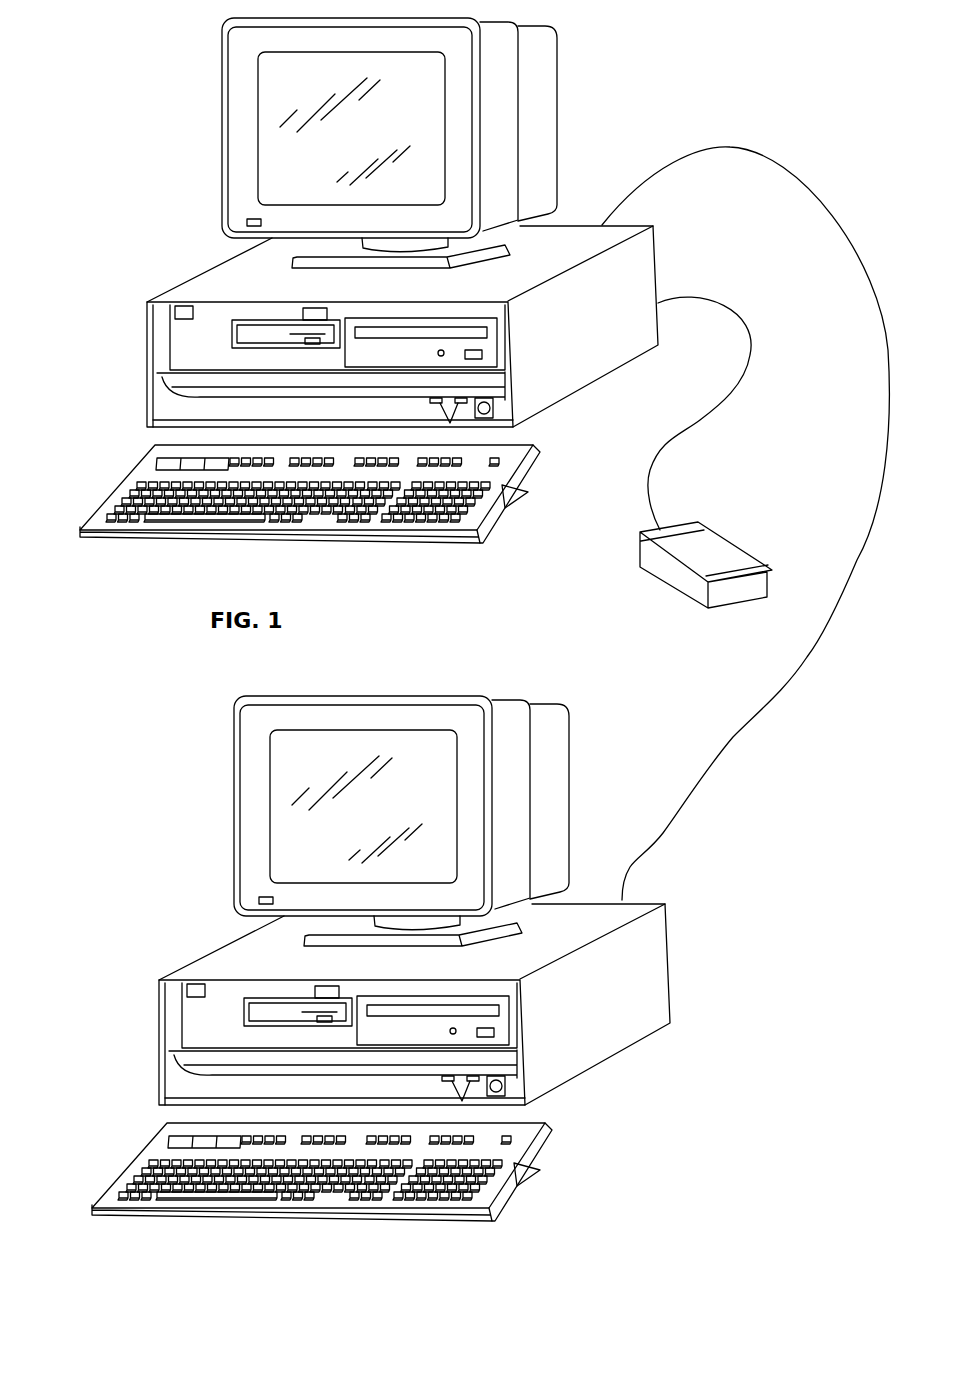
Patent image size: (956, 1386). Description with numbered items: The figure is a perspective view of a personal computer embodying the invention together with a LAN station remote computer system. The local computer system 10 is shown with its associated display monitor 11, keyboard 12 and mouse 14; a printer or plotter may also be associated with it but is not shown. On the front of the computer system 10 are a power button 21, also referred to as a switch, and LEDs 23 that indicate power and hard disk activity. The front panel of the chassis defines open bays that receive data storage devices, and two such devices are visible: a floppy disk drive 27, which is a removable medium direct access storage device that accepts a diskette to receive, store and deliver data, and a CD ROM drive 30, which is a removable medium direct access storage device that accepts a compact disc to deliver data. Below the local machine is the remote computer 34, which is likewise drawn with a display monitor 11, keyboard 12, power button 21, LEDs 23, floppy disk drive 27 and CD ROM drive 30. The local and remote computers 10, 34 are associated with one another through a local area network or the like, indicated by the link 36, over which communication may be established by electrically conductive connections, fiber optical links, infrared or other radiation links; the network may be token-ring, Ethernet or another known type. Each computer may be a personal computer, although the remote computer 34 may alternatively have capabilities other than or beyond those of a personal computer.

The computer system 10 is at (117, 112).
The display monitor 11 is at (558, 60).
The keyboard 12 is at (363, 543).
The mouse 14 is at (738, 540).
The power button 21 is at (493, 408).
The LEDs 23 is at (450, 423).
The floppy disk drive 27 is at (252, 342).
The CD ROM drive 30 is at (488, 353).
The remote computer 34 is at (167, 775).
The link 36 is at (808, 657).